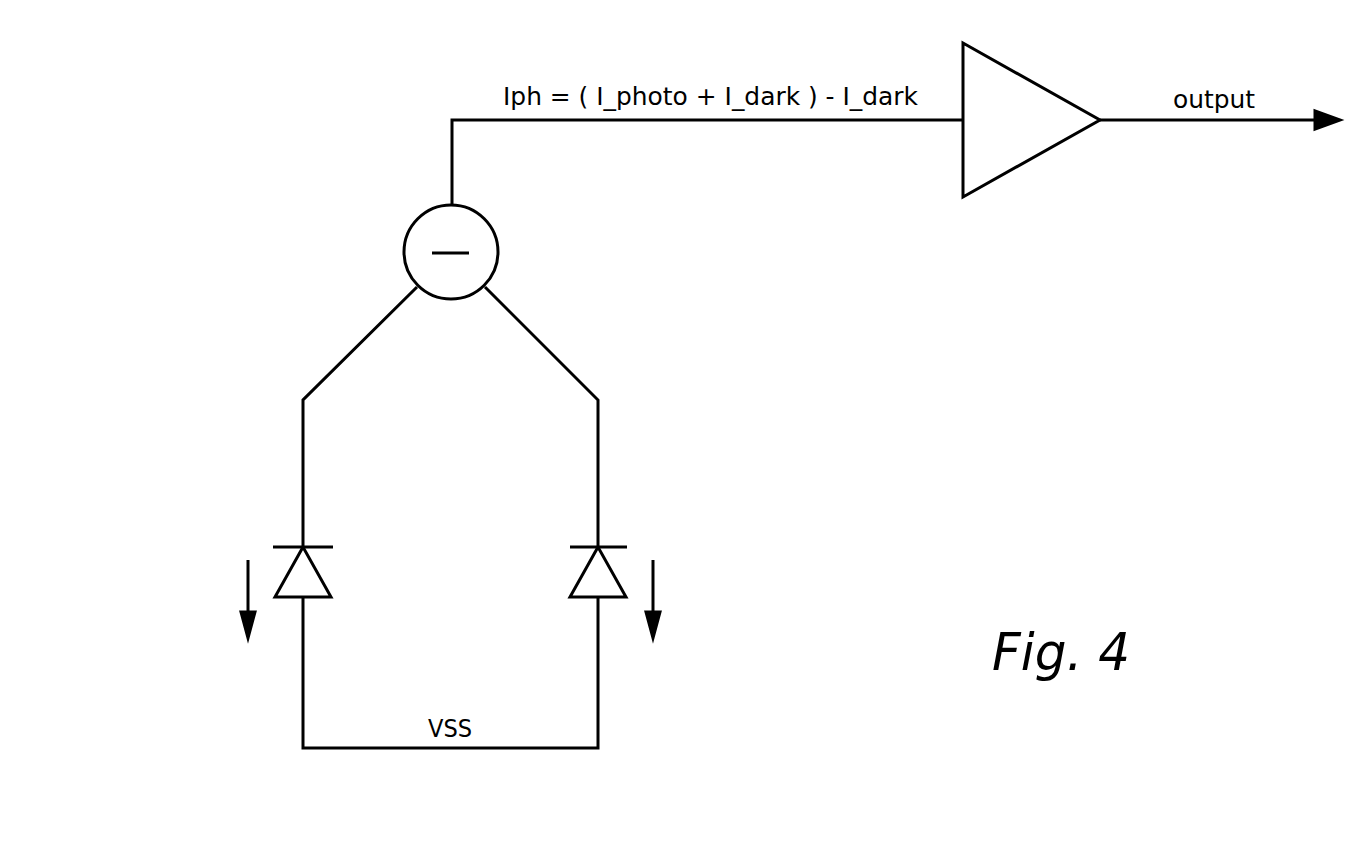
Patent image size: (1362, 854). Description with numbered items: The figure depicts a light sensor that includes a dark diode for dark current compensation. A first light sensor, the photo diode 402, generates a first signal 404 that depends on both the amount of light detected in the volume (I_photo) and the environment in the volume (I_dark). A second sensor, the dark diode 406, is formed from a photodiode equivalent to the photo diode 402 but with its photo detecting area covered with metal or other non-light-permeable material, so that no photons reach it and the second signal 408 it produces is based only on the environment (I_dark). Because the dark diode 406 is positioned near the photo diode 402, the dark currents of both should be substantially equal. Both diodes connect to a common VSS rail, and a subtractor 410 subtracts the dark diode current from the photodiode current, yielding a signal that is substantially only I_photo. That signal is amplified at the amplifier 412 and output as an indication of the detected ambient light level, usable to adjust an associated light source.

The first light sensor (photo diode) 402 is at (578, 570).
The first signal 404 is at (693, 620).
The second sensor (dark diode) 406 is at (318, 570).
The second signal 408 is at (203, 613).
The subtractor 410 is at (404, 251).
The amplifier 412 is at (1027, 163).